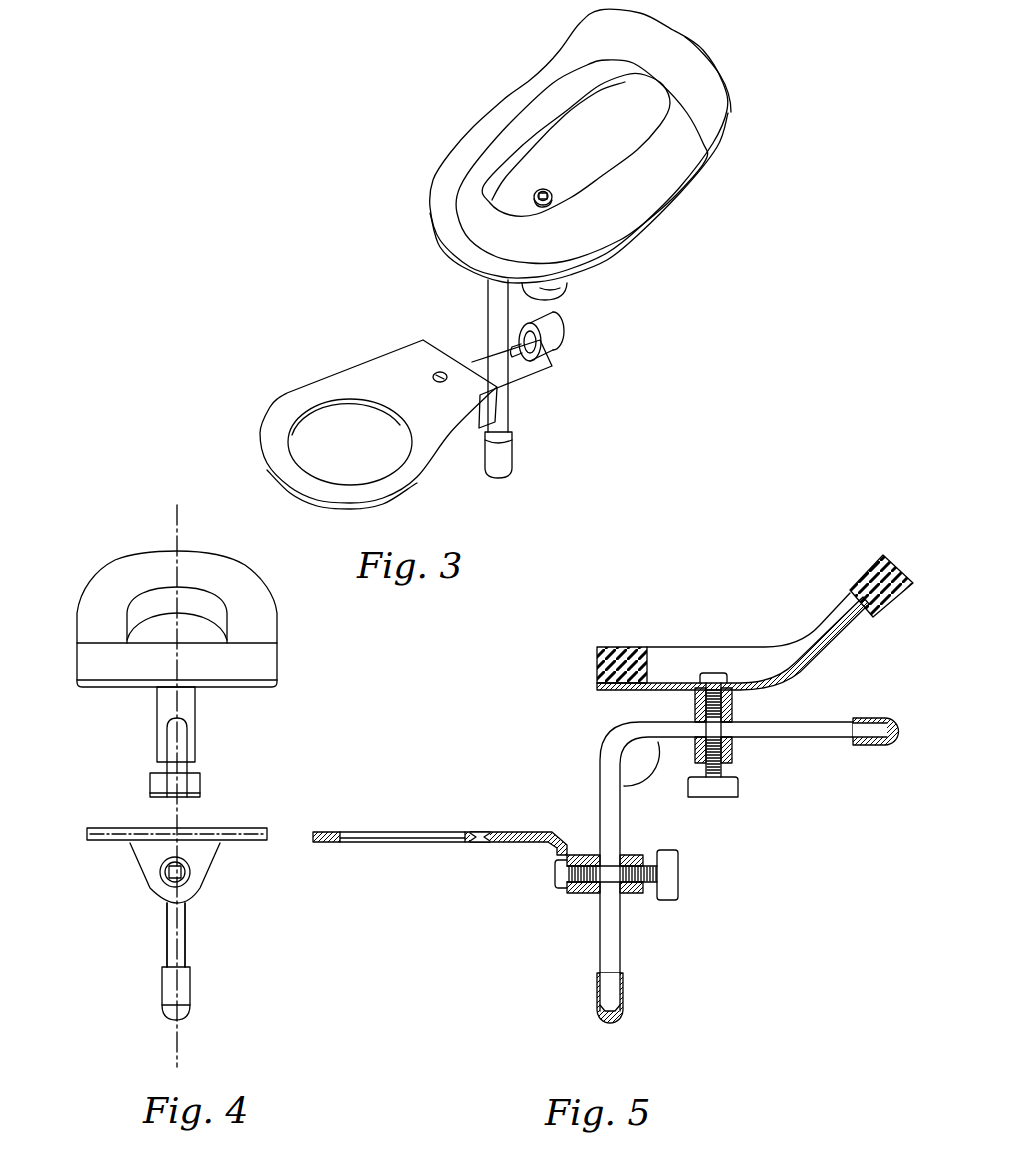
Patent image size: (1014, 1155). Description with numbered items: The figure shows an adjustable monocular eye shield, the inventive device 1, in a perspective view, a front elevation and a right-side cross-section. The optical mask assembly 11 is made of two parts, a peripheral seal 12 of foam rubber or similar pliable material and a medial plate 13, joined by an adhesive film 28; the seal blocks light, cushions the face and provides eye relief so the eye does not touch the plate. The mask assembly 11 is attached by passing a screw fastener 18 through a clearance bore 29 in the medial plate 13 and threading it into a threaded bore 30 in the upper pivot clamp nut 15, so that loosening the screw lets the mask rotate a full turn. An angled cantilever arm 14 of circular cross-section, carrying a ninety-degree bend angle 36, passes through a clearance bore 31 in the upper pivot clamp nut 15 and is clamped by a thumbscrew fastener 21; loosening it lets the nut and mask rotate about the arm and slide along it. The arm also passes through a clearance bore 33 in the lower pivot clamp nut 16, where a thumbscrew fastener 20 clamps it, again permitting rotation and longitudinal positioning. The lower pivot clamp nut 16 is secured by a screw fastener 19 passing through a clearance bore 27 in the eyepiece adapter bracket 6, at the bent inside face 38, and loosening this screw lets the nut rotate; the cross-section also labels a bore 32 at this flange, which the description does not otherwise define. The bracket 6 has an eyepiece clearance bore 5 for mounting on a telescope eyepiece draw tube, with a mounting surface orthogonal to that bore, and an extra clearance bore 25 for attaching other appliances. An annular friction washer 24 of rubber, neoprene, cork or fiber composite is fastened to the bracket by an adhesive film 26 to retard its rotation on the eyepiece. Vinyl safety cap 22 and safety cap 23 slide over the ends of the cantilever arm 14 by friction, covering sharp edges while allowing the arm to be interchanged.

In FIG. 3, the holding device 1 is at (323, 205).
In FIG. 4, the holding device 1 is at (268, 905).
In FIG. 5, the holding device 1 is at (443, 751).
In FIG. 3, the eyepiece clearance bore 5 is at (350, 473).
In FIG. 4, the eyepiece clearance bore 5 is at (177, 505).
In FIG. 5, the eyepiece clearance bore 5 is at (387, 853).
In FIG. 3, the eyepiece adapter bracket 6 is at (410, 472).
In FIG. 4, the eyepiece adapter bracket 6 is at (90, 830).
In FIG. 5, the eyepiece adapter bracket 6 is at (323, 827).
In FIG. 3, the optical mask assembly 11 is at (481, 74).
In FIG. 4, the optical mask assembly 11 is at (85, 540).
In FIG. 5, the optical mask assembly 11 is at (757, 564).
In FIG. 3, the peripheral seal 12 is at (495, 122).
In FIG. 4, the peripheral seal 12 is at (95, 605).
In FIG. 5, the peripheral seal 12 is at (597, 660).
In FIG. 3, the medial plate 13 is at (600, 138).
In FIG. 4, the medial plate 13 is at (195, 628).
In FIG. 5, the medial plate 13 is at (830, 648).
In FIG. 3, the angled cantilever arm 14 is at (492, 312).
In FIG. 4, the angled cantilever arm 14 is at (168, 938).
In FIG. 5, the angled cantilever arm 14 is at (601, 771).
In FIG. 4, the upper pivot clamp nut 15 is at (165, 714).
In FIG. 5, the upper pivot clamp nut 15 is at (695, 707).
In FIG. 3, the lower pivot clamp nut 16 is at (518, 370).
In FIG. 5, the lower pivot clamp nut 16 is at (635, 853).
In FIG. 3, the screw fastener 18 is at (538, 197).
In FIG. 5, the screw fastener 18 is at (716, 673).
In FIG. 4, the screw fastener 19 is at (182, 870).
In FIG. 5, the screw fastener 19 is at (545, 867).
In FIG. 3, the thumbscrew fastener 20 is at (549, 334).
In FIG. 5, the thumbscrew fastener 20 is at (672, 875).
In FIG. 3, the thumbscrew fastener 21 is at (553, 290).
In FIG. 4, the thumbscrew fastener 21 is at (190, 795).
In FIG. 5, the thumbscrew fastener 21 is at (715, 790).
In FIG. 5, the safety cap 22 is at (866, 718).
In FIG. 3, the safety cap 23 is at (505, 456).
In FIG. 4, the safety cap 23 is at (186, 990).
In FIG. 5, the safety cap 23 is at (625, 985).
In FIG. 3, the annular friction washer 24 is at (332, 403).
In FIG. 4, the annular friction washer 24 is at (98, 843).
In FIG. 5, the annular friction washer 24 is at (333, 842).
In FIG. 3, the clearance bore 25 is at (433, 375).
In FIG. 5, the clearance bore 25 is at (530, 830).
In FIG. 5, the adhesive film 26 is at (482, 843).
In FIG. 5, the clearance bore 27 is at (567, 890).
In FIG. 5, the adhesive film 28 is at (597, 683).
In FIG. 5, the clearance bore 29 is at (735, 690).
In FIG. 5, the threaded bore 30 is at (735, 752).
In FIG. 5, the clearance bore 31 is at (735, 705).
In FIG. 5, the flange bore 32 is at (597, 893).
In FIG. 5, the clearance bore 33 is at (625, 893).
In FIG. 5, the bend angle 36 is at (660, 772).
In FIG. 4, the face 38 is at (149, 891).
In FIG. 5, the face 38 is at (544, 850).